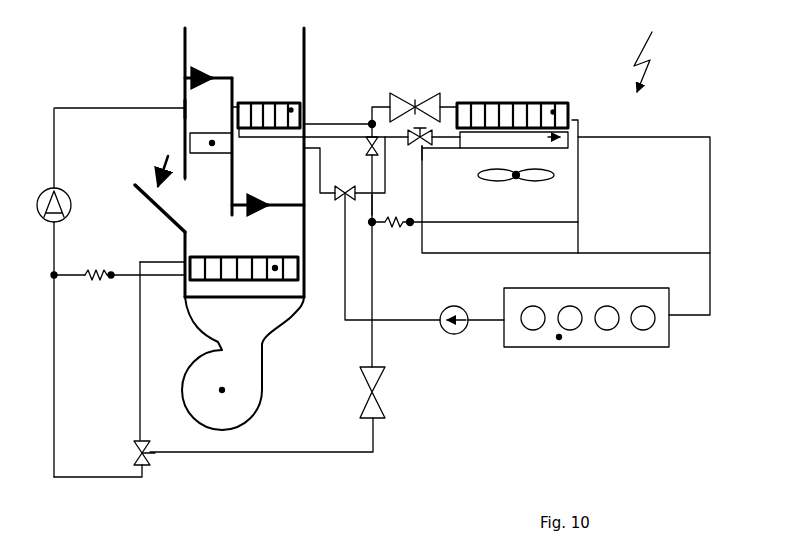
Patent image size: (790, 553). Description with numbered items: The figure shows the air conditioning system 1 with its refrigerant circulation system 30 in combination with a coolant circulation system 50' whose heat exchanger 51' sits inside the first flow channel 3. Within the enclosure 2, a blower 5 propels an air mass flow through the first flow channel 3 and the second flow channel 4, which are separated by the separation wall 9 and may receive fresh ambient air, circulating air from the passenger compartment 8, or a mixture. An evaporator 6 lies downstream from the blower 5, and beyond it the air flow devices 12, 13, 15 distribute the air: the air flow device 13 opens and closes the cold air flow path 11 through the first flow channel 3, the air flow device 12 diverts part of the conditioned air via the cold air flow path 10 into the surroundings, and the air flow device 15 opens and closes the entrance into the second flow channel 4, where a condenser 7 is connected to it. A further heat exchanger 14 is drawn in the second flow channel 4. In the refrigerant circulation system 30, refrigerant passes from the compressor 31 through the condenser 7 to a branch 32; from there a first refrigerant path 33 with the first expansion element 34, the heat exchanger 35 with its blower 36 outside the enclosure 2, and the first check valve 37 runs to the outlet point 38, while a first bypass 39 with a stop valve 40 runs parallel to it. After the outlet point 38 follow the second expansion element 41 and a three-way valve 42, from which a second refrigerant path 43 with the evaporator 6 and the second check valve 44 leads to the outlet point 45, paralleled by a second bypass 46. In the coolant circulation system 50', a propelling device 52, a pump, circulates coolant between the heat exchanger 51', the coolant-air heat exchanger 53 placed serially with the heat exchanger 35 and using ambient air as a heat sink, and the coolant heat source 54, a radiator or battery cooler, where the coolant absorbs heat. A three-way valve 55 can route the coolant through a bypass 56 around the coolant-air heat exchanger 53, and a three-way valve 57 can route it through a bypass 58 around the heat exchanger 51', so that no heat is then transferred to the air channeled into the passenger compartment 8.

The air conditioning system 1 is at (644, 51).
The enclosure 2 is at (184, 62).
The first flow channel 3 is at (176, 94).
The second flow channel 4 is at (309, 70).
The blower 5 is at (224, 391).
The evaporator 6 is at (276, 269).
The condenser 7 is at (296, 103).
The passenger compartment 8 is at (215, 53).
The separation wall 9 is at (229, 203).
The cold air flow path 10 is at (160, 163).
The cold air flow path 11 is at (211, 133).
The air flow device 12 is at (150, 186).
The air flow device 13 is at (183, 86).
The heat exchanger 14 is at (269, 101).
The air flow device 15 is at (274, 209).
The refrigerant circulation system 30 is at (385, 452).
The compressor 31 is at (67, 213).
The branch 32 is at (369, 122).
The first refrigerant path 33 is at (389, 104).
The first expansion element 34 is at (437, 122).
The heat exchanger 35 is at (553, 110).
The blower 36 is at (517, 178).
The first check valve 37 is at (409, 232).
The outlet point 38 is at (370, 225).
The first bypass 39 is at (375, 210).
The stop valve 40 is at (379, 150).
The second expansion element 41 is at (376, 394).
The three-way valve 42 is at (136, 450).
The second refrigerant path 43 is at (140, 372).
The second check valve 44 is at (108, 280).
The outlet point 45 is at (60, 280).
The second bypass 46 is at (57, 408).
The coolant circulation system 50' is at (644, 226).
The heat exchanger 51' is at (202, 169).
The propelling device 52 is at (459, 331).
The coolant-air heat exchanger 53 is at (578, 150).
The coolant heat source 54 is at (558, 338).
The three-way valve 55 is at (425, 148).
The bypass 56 is at (486, 253).
The three-way valve 57 is at (345, 188).
The bypass 58 is at (432, 180).